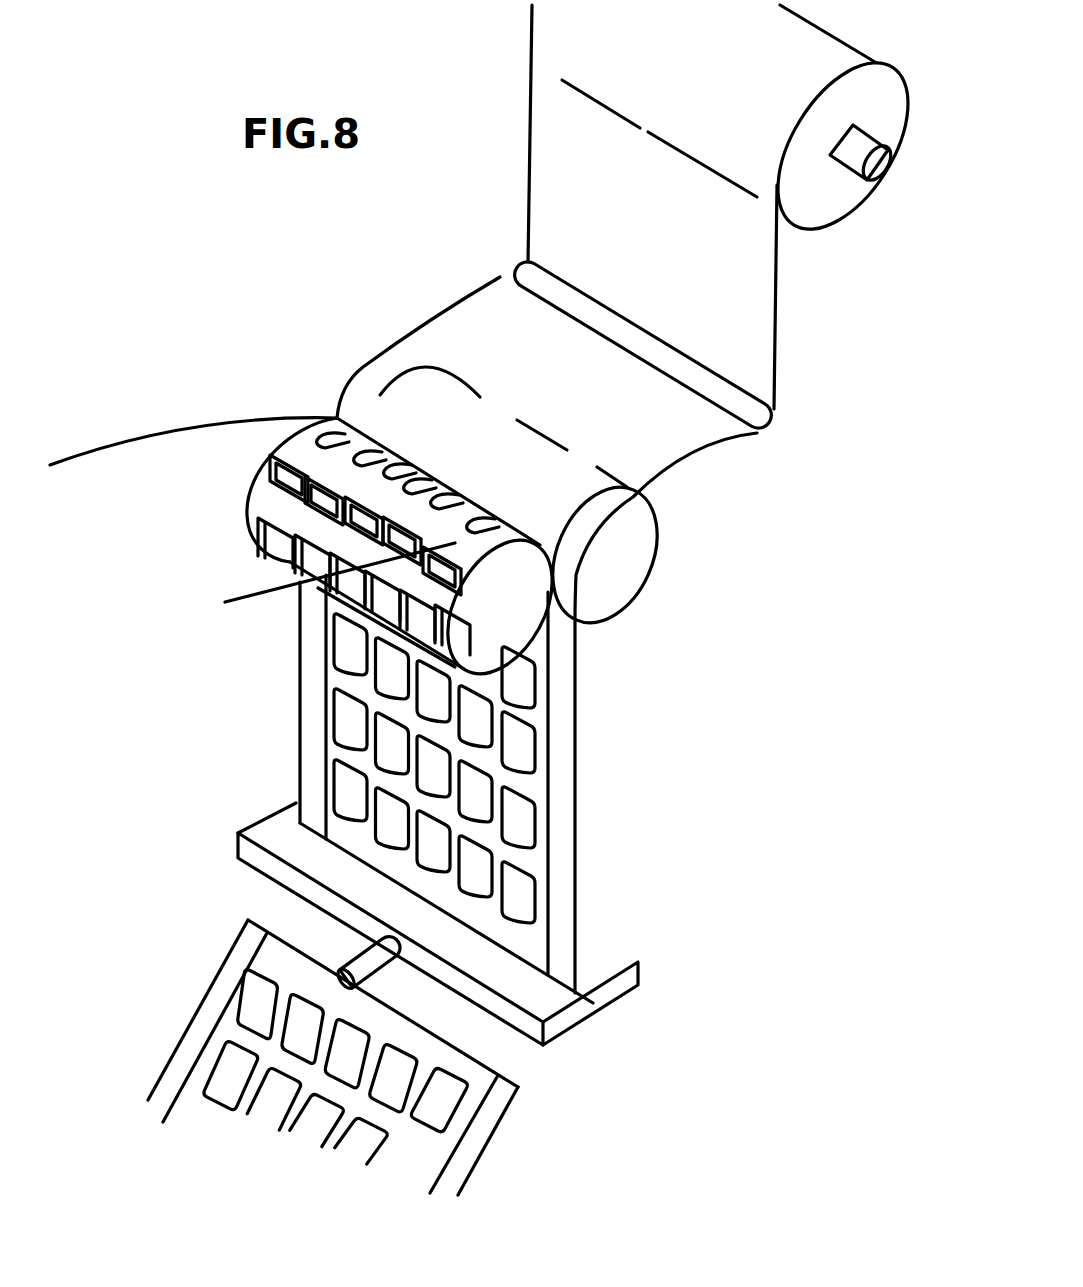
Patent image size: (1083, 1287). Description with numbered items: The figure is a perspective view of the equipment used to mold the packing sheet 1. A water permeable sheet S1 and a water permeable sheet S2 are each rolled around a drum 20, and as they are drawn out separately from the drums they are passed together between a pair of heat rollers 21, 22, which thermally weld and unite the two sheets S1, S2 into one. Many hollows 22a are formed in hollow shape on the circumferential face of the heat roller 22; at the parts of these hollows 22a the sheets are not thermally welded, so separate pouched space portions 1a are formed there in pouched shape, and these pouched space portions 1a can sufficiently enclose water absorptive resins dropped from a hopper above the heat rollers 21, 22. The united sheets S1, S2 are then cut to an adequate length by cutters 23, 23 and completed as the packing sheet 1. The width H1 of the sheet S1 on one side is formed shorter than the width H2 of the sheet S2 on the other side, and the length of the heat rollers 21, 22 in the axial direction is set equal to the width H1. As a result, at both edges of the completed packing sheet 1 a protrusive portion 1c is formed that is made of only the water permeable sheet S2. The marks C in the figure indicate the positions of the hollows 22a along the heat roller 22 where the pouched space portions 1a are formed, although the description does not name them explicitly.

The packing sheet 1 is at (600, 882).
The pouched space portion 1a is at (342, 647).
The protrusive portion 1c is at (205, 1013).
The drum 20 is at (833, 205).
The heat roller 21 is at (624, 577).
The heat roller 22 is at (523, 622).
The hollow 22a is at (497, 668).
The cutter 23 is at (565, 1027).
The water permeable sheet S1 is at (630, 808).
The water permeable sheet S2 is at (712, 436).
The width of the water permeable sheet S1 H1 is at (87, 459).
The width of the water permeable sheet S2 H2 is at (462, 308).
The cutting positions C is at (358, 418).